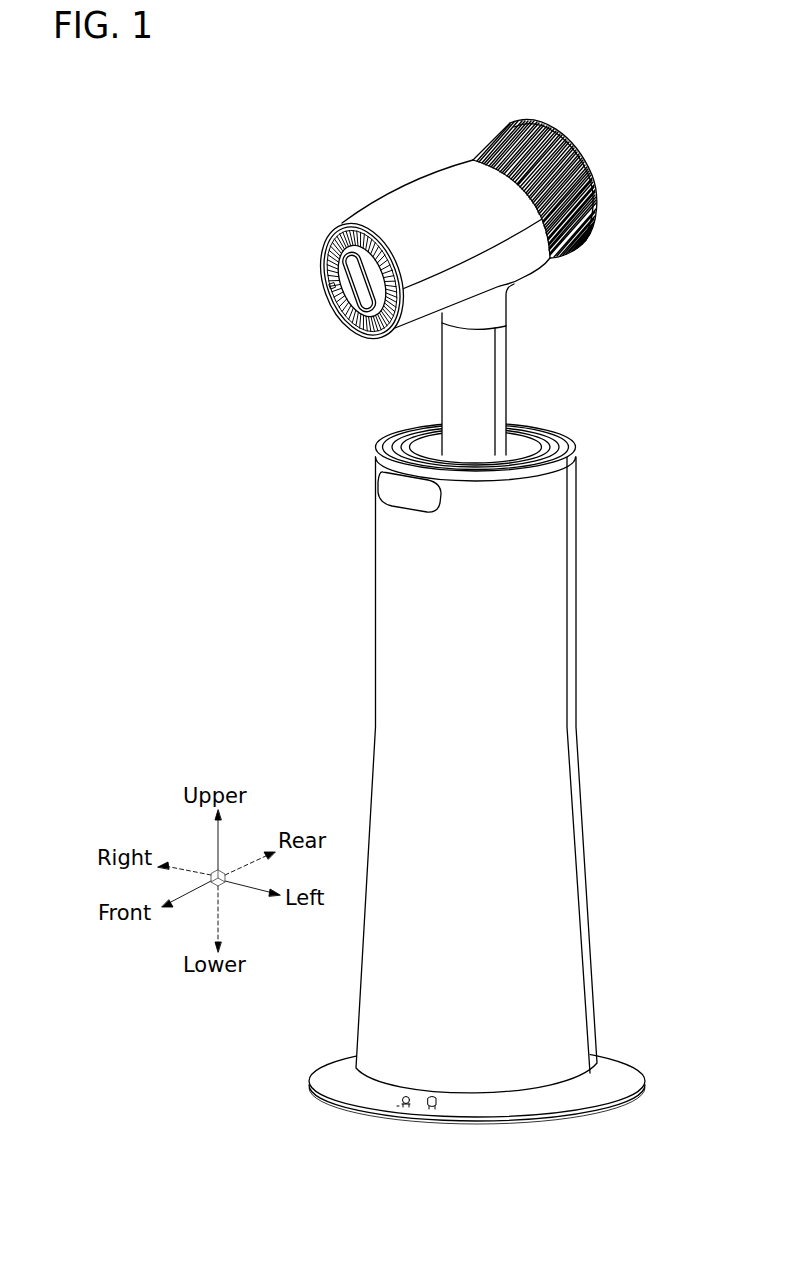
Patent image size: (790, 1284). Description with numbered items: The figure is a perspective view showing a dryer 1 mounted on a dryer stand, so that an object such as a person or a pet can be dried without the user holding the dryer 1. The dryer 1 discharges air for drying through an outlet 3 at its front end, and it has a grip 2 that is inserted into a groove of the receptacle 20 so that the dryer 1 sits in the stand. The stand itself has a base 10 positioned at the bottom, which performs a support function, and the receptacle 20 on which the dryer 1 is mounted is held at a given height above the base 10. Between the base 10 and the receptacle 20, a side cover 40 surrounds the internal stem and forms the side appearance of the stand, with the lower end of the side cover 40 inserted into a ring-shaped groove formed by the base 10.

The dryer 1 is at (485, 603).
The grip 2 is at (500, 367).
The outlet 3 is at (358, 283).
The base 10 is at (615, 1065).
The receptacle 20 is at (520, 443).
The side cover 40 is at (590, 630).